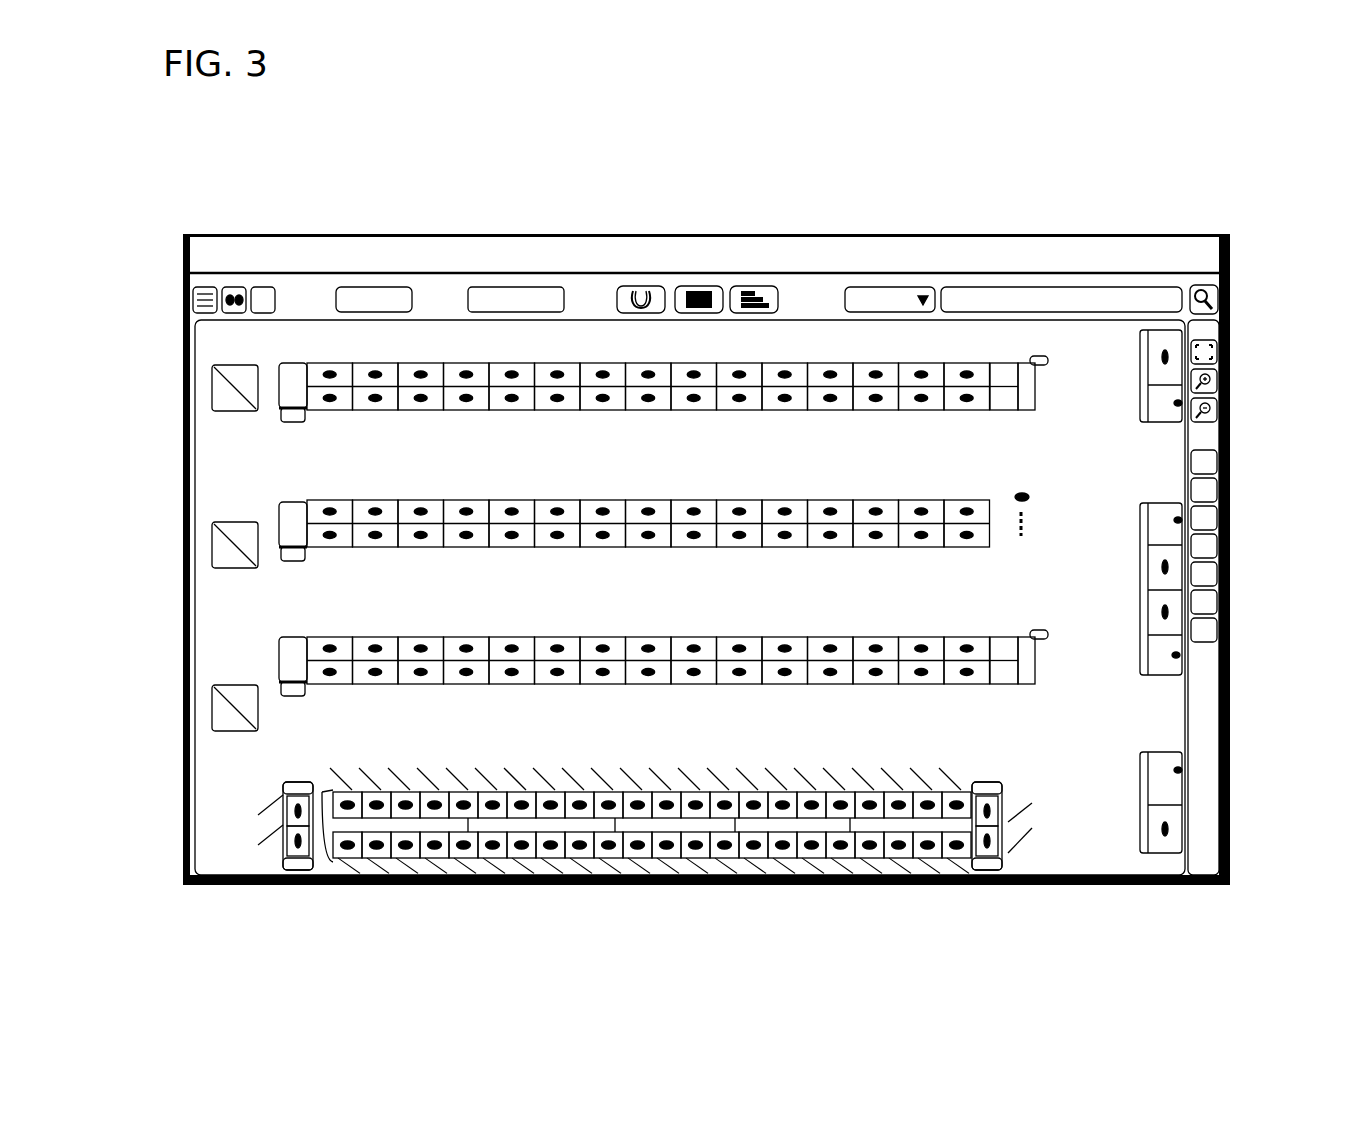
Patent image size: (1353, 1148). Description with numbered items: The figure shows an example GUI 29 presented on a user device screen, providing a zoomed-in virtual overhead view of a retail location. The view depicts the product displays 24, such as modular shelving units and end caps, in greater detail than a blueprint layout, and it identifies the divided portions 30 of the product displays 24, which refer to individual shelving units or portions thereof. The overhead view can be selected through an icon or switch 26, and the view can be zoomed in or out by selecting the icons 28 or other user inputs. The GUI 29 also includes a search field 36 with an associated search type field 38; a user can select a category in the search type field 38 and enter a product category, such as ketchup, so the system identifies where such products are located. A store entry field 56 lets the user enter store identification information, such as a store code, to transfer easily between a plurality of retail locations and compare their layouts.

The GUI 29 is at (1254, 140).
The store entry field 56 is at (347, 292).
The divided portions 30 is at (390, 368).
The icon or switch 26 is at (663, 287).
The product displays 24 is at (829, 365).
The search type field 38 is at (897, 283).
The search field 36 is at (1059, 285).
The icons 28 is at (1233, 348).